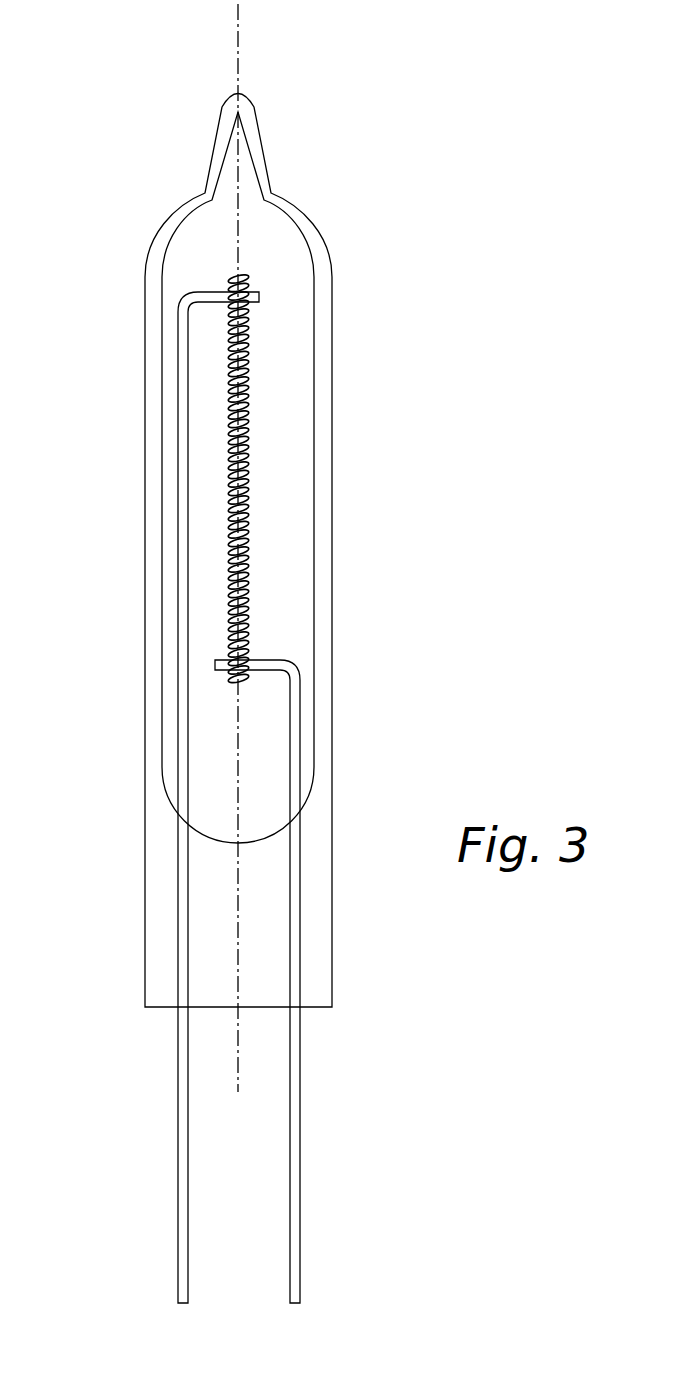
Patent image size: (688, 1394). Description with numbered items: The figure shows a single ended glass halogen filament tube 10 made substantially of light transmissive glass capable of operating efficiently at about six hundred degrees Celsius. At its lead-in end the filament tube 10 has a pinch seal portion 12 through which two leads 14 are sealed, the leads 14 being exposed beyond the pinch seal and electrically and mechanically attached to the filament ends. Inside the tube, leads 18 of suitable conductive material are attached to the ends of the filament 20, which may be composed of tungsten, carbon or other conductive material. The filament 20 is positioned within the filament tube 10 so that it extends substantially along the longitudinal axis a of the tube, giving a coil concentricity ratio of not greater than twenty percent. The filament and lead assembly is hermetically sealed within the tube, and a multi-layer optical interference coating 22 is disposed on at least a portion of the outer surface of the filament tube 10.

The longitudinal axis a is at (238, 57).
The filament tube 10 is at (356, 280).
The pinch seal portion 12 is at (136, 921).
The leads 14 is at (182, 1183).
The leads 18 is at (212, 290).
The filament 20 is at (258, 447).
The multi-layer optical interference coating 22 is at (150, 520).